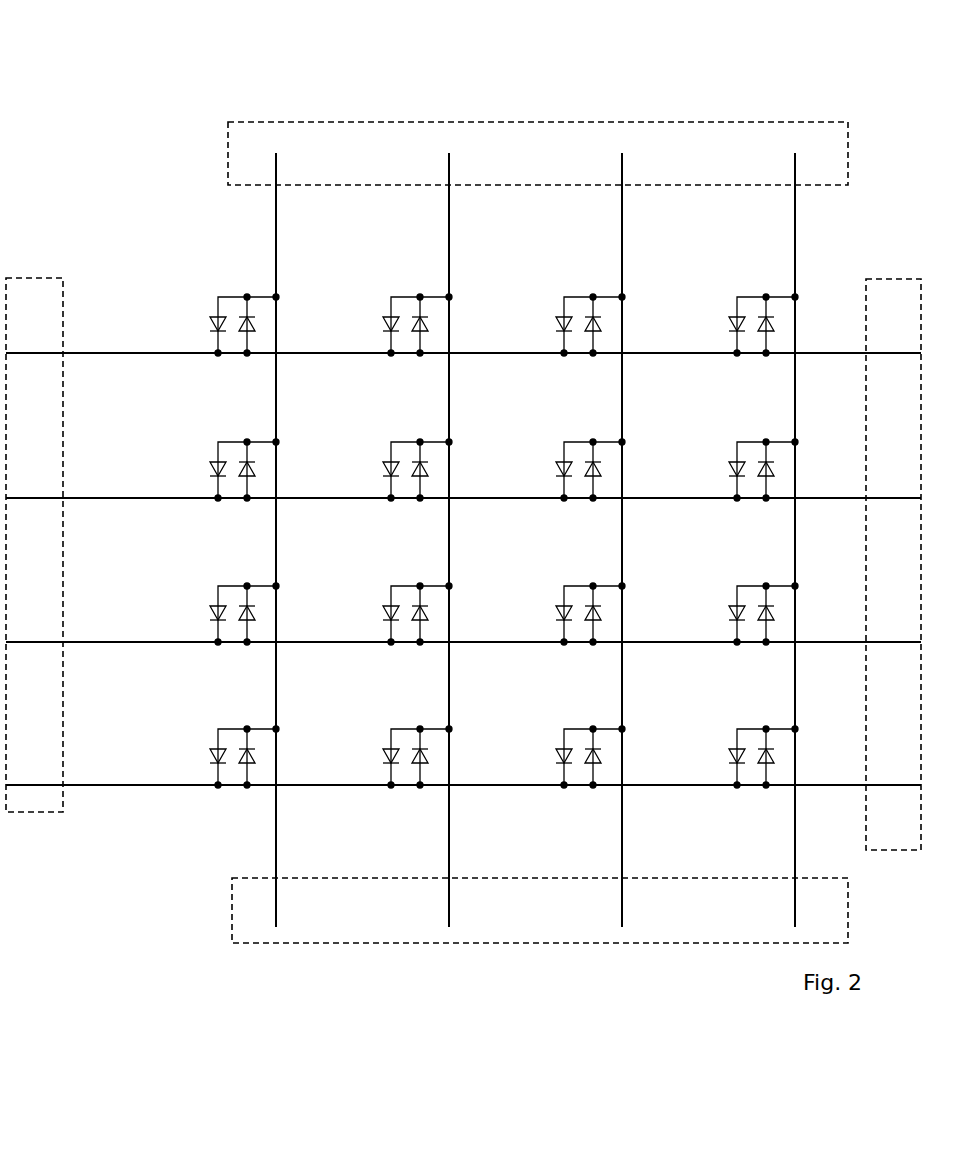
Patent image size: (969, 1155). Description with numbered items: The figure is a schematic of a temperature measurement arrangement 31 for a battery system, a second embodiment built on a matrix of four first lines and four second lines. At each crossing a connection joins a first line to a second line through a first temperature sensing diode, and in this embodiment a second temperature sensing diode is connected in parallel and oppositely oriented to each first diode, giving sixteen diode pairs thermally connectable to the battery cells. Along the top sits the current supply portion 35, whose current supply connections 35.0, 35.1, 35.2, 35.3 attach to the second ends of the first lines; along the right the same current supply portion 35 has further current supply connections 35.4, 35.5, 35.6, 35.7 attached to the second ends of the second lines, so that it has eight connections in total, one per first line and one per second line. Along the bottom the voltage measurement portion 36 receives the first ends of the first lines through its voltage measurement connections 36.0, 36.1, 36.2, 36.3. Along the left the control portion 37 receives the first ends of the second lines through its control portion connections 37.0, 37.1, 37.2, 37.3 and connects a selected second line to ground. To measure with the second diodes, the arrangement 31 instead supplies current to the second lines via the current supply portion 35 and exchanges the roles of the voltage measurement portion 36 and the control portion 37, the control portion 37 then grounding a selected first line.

The temperature measurement arrangement 31 is at (120, 68).
The current supply portion 35 is at (216, 160).
The voltage measurement portion 36 is at (220, 904).
The control portion 37 is at (38, 262).
The current supply connection 35.0 is at (303, 169).
The current supply connection 35.1 is at (476, 169).
The current supply connection 35.2 is at (649, 169).
The current supply connection 35.3 is at (822, 169).
The current supply connection 35.4 is at (893, 812).
The current supply connection 35.5 is at (893, 669).
The current supply connection 35.6 is at (893, 525).
The current supply connection 35.7 is at (893, 380).
The voltage measurement connection 36.0 is at (303, 902).
The voltage measurement connection 36.1 is at (476, 902).
The voltage measurement connection 36.2 is at (649, 902).
The voltage measurement connection 36.3 is at (822, 902).
The control portion connection 37.0 is at (34, 760).
The control portion connection 37.1 is at (34, 617).
The control portion connection 37.2 is at (34, 473).
The control portion connection 37.3 is at (34, 328).